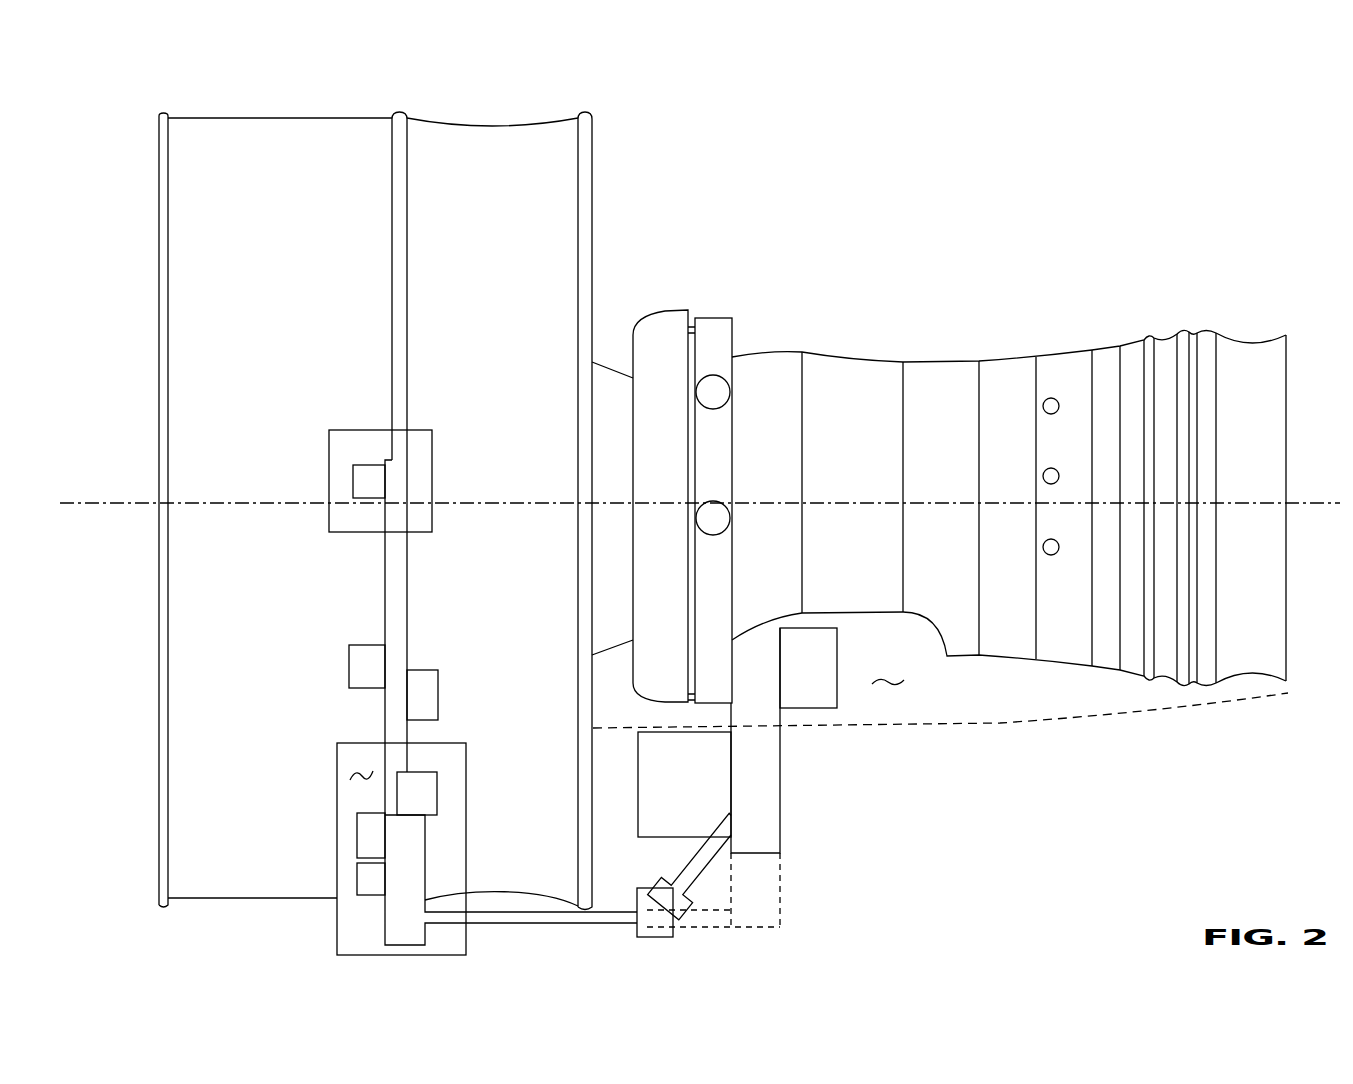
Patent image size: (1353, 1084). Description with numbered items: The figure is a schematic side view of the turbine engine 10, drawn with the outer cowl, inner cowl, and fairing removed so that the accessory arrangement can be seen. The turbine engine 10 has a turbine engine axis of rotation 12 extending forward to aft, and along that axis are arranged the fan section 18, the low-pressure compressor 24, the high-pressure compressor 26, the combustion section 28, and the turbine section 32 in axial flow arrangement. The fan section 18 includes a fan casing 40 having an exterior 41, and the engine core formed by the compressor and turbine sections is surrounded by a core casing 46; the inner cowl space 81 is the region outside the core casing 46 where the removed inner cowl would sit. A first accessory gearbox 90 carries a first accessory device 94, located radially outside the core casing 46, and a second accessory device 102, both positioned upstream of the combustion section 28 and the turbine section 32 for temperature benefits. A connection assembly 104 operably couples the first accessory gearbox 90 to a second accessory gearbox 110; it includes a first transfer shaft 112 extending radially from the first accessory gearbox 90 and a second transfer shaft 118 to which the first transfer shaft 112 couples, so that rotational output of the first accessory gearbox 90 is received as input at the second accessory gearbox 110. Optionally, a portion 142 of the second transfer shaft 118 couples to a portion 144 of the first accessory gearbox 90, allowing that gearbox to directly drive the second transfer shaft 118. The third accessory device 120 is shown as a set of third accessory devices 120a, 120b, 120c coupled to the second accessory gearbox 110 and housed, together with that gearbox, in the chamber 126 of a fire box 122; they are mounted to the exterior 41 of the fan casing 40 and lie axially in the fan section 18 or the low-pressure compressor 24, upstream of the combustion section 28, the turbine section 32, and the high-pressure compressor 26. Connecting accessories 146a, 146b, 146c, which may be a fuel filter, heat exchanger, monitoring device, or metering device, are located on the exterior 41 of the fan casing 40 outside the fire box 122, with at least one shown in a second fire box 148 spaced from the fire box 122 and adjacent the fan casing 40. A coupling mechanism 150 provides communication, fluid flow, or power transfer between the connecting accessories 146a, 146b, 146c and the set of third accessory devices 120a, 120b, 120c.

The turbine engine 10 is at (1158, 154).
The turbine engine axis of rotation 12 is at (990, 503).
The fan section 18 is at (160, 113).
The low-pressure compressor 24 is at (392, 112).
The high-pressure compressor 26 is at (1023, 356).
The combustion section 28 is at (1102, 349).
The turbine section 32 is at (1288, 335).
The fan casing 40 is at (464, 115).
The exterior of the fan casing 41 is at (257, 113).
The core casing 46 is at (825, 350).
The inner cowl space 81 is at (888, 670).
The first accessory gearbox (AGB1) 90 is at (794, 811).
The first accessory device 94 is at (842, 690).
The second accessory device 102 is at (680, 731).
The connection assembly 104 is at (747, 925).
The second accessory gearbox (AGB2) 110 is at (373, 921).
The first transfer shaft 112 is at (710, 866).
The second transfer shaft 118 is at (590, 926).
The third accessory device 120 is at (319, 867).
The third accessory device 120a is at (437, 815).
The third accessory device 120b is at (357, 878).
The third accessory device 120c is at (357, 838).
The fire box 122 is at (325, 758).
The chamber 126 is at (350, 776).
The portion of the second transfer shaft 142 is at (700, 927).
The portion of the AGB1 144 is at (780, 885).
The connecting accessory 146a is at (353, 480).
The connecting accessory 146b is at (438, 688).
The connecting accessory 146c is at (349, 660).
The second fire box 148 is at (358, 430).
The coupling mechanism 150 is at (385, 577).